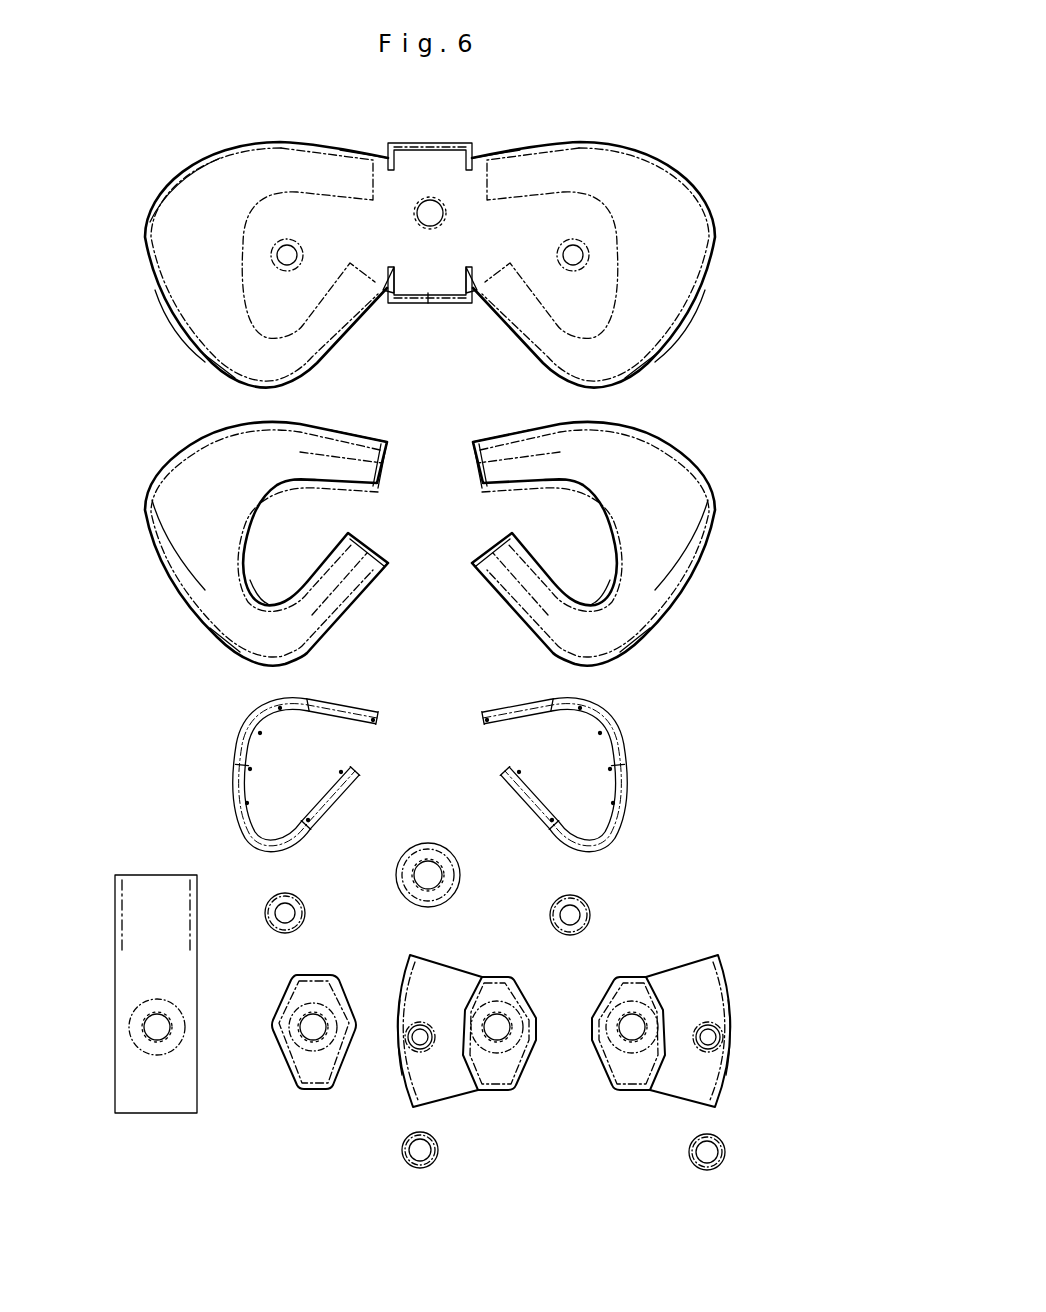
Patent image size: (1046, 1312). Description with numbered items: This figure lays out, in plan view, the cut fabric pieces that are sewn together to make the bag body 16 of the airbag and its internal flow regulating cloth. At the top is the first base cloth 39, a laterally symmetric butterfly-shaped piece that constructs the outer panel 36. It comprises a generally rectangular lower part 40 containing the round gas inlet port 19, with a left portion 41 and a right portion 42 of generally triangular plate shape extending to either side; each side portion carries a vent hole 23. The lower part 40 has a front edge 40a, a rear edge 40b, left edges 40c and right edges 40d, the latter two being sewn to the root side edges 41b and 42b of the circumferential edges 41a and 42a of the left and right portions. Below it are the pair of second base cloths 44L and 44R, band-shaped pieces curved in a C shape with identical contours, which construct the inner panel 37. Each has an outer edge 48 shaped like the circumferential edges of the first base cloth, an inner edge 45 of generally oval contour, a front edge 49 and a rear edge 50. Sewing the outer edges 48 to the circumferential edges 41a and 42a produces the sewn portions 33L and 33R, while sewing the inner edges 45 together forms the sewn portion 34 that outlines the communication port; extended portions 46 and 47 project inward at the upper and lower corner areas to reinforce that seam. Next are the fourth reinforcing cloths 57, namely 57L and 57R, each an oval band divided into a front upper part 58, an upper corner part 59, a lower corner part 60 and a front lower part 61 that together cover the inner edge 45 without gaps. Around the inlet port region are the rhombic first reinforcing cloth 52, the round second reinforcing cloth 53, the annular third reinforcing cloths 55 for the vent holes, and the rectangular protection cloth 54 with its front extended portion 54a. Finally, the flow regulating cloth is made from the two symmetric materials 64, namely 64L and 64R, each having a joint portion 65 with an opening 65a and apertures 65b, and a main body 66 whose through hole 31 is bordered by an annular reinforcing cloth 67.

The bag body 16 is at (96, 409).
The gas inlet port 19 is at (430, 205).
The vent hole 23 is at (278, 263).
The through hole 31 is at (421, 1038).
The sewn portion 33R is at (208, 357).
The sewn portion 33L is at (650, 353).
The sewn portion 34 is at (255, 220).
The outer panel 36 is at (152, 328).
The inner panel 37 is at (137, 535).
The first base cloth 39 is at (141, 209).
The lower part 40 is at (428, 303).
The front edge 40a is at (423, 143).
The rear edge 40b is at (410, 287).
The left edges 40c is at (465, 150).
The right edges 40d is at (395, 150).
The left portion 41 is at (688, 272).
The circumferential edge 41a is at (713, 220).
The root side edges 41b is at (477, 160).
The right portion 42 is at (169, 261).
The circumferential edge 42a is at (162, 340).
The root side edges 42b is at (383, 160).
The second base cloth 44R is at (169, 587).
The second base cloth 44L is at (690, 588).
The inner edge 45 is at (337, 490).
The extended portion 46 is at (280, 483).
The extended portion 47 is at (268, 604).
The outer edge 48 is at (150, 554).
The front edge 49 is at (477, 478).
The rear edge 50 is at (490, 543).
The first reinforcing cloth 52 is at (275, 1022).
The second reinforcing cloth 53 is at (397, 888).
The protection cloth 54 is at (113, 1033).
The front extended portion 54a is at (130, 907).
The third reinforcing cloth 55 is at (285, 888).
The fourth reinforcing cloth 57 is at (430, 720).
The fourth reinforcing cloth 57R is at (360, 693).
The fourth reinforcing cloth 57L is at (500, 693).
The front upper part 58 is at (355, 720).
The upper corner part 59 is at (245, 728).
The lower corner part 60 is at (237, 827).
The front lower part 61 is at (333, 803).
The material for flow regulating cloth 64 is at (564, 1060).
The material for flow regulating cloth 64R is at (478, 1100).
The material for flow regulating cloth 64L is at (658, 1100).
The joint portion 65 is at (502, 980).
The opening 65a is at (500, 1025).
The aperture 65b is at (644, 1018).
The main body 66 is at (406, 1069).
The reinforcing cloth 67 is at (402, 1165).